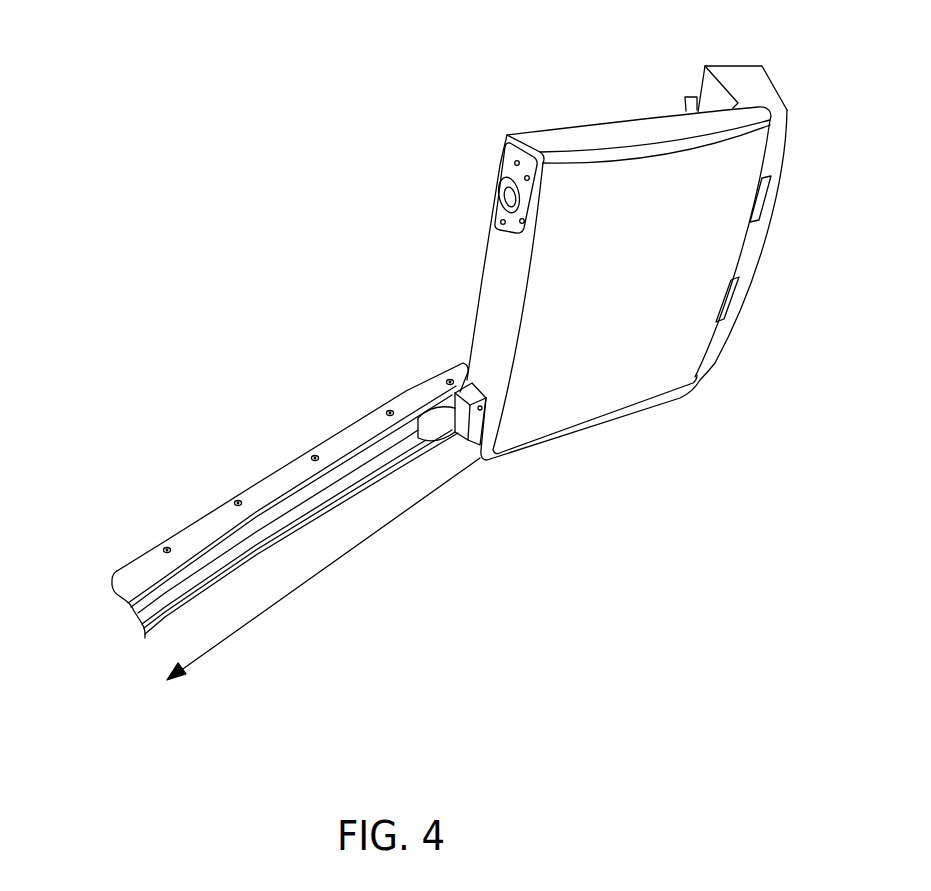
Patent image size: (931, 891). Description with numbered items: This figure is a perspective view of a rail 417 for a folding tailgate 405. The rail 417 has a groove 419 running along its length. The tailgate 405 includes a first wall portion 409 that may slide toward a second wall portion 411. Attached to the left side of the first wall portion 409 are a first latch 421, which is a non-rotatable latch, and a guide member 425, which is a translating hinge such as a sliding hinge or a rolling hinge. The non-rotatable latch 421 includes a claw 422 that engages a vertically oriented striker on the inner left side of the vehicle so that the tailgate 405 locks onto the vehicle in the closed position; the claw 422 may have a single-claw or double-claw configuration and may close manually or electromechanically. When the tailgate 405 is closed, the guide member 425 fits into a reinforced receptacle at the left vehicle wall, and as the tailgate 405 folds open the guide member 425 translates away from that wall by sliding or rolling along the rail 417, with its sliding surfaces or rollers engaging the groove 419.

The folding tailgate 405 is at (647, 90).
The first wall portion 409 is at (622, 118).
The second wall portion 411 is at (767, 72).
The rail 417 is at (140, 560).
The groove 419 is at (233, 557).
The first latch 421 is at (498, 180).
The claw 422 is at (500, 202).
The guide member 425 is at (433, 447).